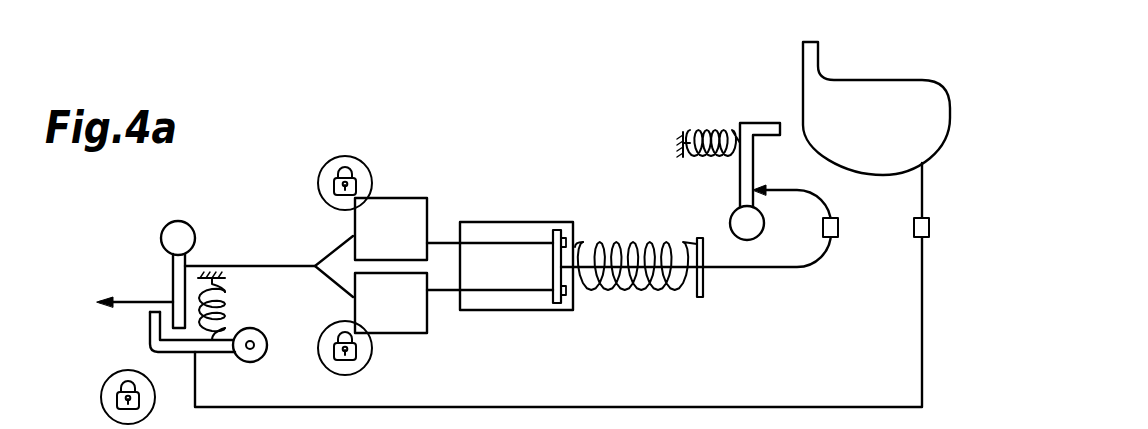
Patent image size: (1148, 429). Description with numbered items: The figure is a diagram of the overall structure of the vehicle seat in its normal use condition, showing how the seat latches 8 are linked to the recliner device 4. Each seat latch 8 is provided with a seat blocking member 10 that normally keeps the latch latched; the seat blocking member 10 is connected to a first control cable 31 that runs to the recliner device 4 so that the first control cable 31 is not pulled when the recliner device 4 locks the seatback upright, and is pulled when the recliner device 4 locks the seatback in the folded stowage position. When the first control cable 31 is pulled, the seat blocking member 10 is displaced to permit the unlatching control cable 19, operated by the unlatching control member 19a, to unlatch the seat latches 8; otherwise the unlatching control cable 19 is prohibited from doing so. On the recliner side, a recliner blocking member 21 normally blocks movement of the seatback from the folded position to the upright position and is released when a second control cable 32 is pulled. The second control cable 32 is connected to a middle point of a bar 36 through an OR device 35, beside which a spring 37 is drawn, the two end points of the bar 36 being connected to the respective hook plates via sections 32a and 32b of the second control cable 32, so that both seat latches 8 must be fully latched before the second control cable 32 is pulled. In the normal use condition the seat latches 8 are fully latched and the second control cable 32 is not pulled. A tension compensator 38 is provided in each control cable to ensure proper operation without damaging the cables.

The recliner device 4 is at (930, 93).
The seat latch 8 is at (417, 273).
The seat blocking member 10 is at (153, 335).
The unlatching control cable 19 is at (143, 300).
The unlatching control member 19a is at (187, 222).
The recliner blocking member 21 is at (765, 122).
The first control cable 31 is at (335, 407).
The second control cable 32 is at (737, 270).
The section of the second control cable 32a is at (443, 243).
The section of the second control cable 32b is at (445, 293).
The OR device 35 is at (573, 311).
The bar 36 is at (553, 295).
The return spring 37 is at (668, 288).
The tension compensator 38 is at (922, 238).